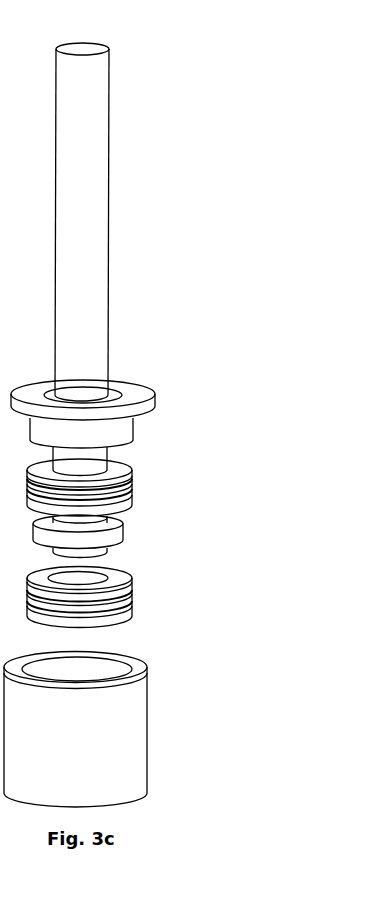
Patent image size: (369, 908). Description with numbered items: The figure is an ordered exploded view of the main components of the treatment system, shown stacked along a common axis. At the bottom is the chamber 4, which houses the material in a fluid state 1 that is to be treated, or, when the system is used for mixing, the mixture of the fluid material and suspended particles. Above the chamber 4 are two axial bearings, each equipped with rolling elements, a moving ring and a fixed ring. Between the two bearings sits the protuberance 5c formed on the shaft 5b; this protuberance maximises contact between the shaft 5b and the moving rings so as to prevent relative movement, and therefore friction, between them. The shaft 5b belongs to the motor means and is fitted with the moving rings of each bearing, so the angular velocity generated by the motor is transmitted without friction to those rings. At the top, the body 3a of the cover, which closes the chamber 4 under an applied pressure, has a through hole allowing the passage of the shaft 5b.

The material in a fluid state 1 is at (106, 669).
The body of the cover 3a is at (156, 400).
The chamber 4 is at (114, 699).
The shaft 5b is at (100, 251).
The protuberance 5c is at (125, 533).